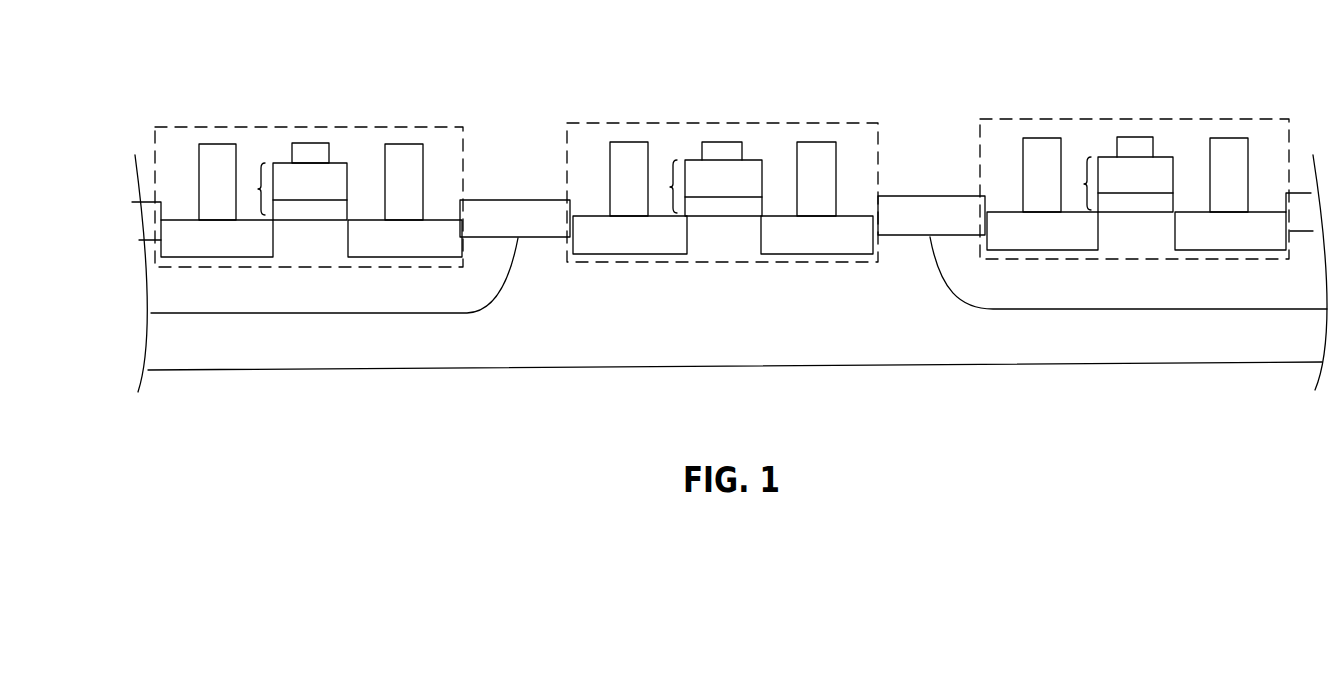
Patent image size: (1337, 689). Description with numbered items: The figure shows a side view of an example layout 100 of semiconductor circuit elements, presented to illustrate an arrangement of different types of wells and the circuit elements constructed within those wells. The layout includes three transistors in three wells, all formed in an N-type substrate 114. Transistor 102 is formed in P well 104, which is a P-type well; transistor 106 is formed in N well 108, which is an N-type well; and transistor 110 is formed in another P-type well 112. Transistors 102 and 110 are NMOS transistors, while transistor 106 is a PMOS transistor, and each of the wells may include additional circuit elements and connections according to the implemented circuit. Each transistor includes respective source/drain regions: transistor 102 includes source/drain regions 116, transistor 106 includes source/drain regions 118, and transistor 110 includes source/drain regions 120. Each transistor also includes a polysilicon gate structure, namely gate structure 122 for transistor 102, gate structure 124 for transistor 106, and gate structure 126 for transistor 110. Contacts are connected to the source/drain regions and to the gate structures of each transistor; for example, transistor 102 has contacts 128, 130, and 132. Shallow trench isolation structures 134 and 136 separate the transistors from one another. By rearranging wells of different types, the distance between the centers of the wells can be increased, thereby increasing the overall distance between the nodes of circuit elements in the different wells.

The layout 100 is at (950, 62).
The transistor 102 is at (393, 126).
The P well 104 is at (360, 297).
The transistor 106 is at (807, 123).
The N well 108 is at (773, 294).
The transistor 110 is at (1218, 119).
The P-type well 112 is at (1185, 291).
The N-type substrate 114 is at (817, 351).
The source/drain regions 116 is at (417, 255).
The source/drain regions 118 is at (772, 231).
The source/drain regions 120 is at (1262, 238).
The gate structure 122 is at (262, 163).
The gate structure 124 is at (674, 160).
The gate structure 126 is at (1088, 158).
The contact 128 is at (207, 160).
The contact 130 is at (317, 155).
The contact 132 is at (413, 180).
The shallow trench isolation structure 134 is at (533, 229).
The shallow trench isolation structure 136 is at (947, 227).